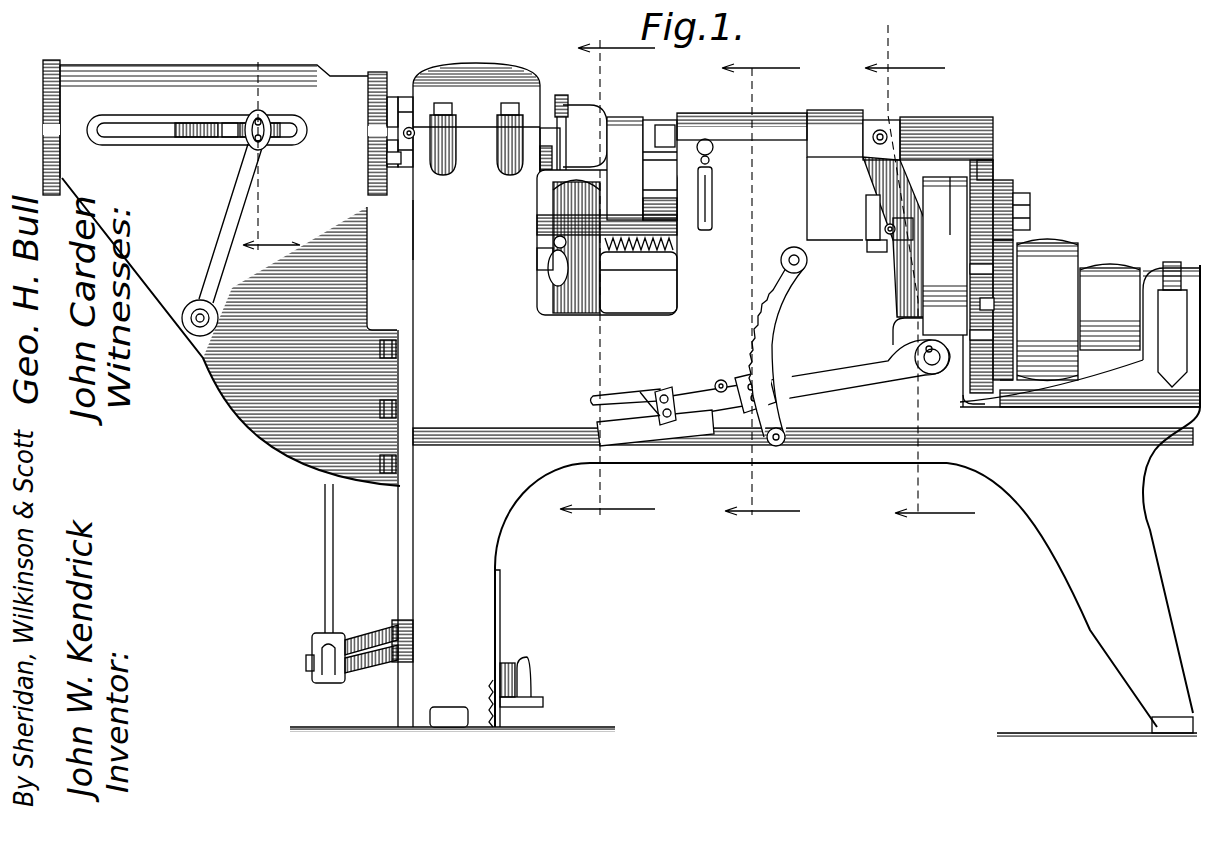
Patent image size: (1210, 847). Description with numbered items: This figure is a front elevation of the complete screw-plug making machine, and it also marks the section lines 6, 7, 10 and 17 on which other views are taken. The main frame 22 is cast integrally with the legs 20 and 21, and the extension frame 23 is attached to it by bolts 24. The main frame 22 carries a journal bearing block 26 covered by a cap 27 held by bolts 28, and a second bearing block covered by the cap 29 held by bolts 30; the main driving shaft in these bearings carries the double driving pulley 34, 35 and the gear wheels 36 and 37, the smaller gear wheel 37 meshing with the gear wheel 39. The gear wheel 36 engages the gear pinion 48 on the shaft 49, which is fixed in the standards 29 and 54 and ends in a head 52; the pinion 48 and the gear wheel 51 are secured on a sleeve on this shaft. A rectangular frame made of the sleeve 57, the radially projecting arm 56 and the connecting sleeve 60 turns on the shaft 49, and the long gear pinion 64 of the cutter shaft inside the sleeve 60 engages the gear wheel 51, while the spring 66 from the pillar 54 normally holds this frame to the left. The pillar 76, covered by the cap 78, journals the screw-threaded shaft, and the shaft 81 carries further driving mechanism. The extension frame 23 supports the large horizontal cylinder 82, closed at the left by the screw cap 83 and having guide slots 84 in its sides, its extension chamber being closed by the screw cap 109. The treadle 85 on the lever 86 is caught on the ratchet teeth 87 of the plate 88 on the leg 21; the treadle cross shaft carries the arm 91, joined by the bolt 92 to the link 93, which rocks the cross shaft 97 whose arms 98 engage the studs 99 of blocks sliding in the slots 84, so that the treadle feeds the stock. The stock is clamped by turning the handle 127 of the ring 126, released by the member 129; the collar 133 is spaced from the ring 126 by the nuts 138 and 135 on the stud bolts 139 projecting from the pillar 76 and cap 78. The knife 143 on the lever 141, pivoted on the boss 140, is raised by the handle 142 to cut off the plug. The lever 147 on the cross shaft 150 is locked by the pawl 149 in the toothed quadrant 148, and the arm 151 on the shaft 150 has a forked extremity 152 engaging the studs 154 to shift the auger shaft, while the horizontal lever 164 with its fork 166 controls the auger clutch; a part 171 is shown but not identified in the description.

The section line 6 6 is at (920, 285).
The section line 7 7 is at (761, 293).
The section line 10 10 is at (607, 279).
The section line 17 17 is at (270, 159).
The leg 20 is at (745, 501).
The leg 21 is at (680, 406).
The main frame 22 is at (830, 448).
The extension frame 23 is at (231, 332).
The bolts 24 is at (380, 405).
The journal bearing block 26 is at (1080, 383).
The cap 27 is at (1152, 268).
The bolts 28 is at (1175, 264).
The cap 29 is at (1013, 236).
The bolts 30 is at (945, 256).
The driving pulley 34 is at (1047, 310).
The driving pulley 35 is at (1105, 270).
The gear wheel 36 is at (1006, 386).
The gear wheel 37 is at (995, 302).
The gear wheel 39 is at (988, 405).
The gear pinion 48 is at (1010, 186).
The shaft 49 is at (870, 190).
The gear wheel 51 is at (995, 170).
The head 52 is at (1030, 211).
The standard 54 is at (579, 312).
The radially projecting arm 56 is at (624, 118).
The sleeve 57 is at (676, 212).
The sleeve 60 is at (653, 122).
The long gear pinion 64 is at (940, 120).
The spring 66 is at (640, 256).
The pillar 76 is at (476, 141).
The cap 78 is at (482, 66).
The shaft 81 is at (553, 244).
The horizontal cylinder 82 is at (172, 68).
The screw cap 83 is at (43, 188).
The horizontal guide slots 84 is at (115, 120).
The treadle 85 is at (536, 700).
The lever 86 is at (513, 666).
The ratchet teeth 87 is at (500, 722).
The plate 88 is at (501, 622).
The arm 91 is at (372, 634).
The bolt 92 is at (308, 666).
The link 93 is at (323, 543).
The cross shaft 97 is at (192, 338).
The arms 98 is at (252, 112).
The stud 99 is at (245, 140).
The screw cap 109 is at (375, 72).
The ring 126 is at (408, 97).
The handle 127 is at (452, 140).
The member 129 is at (403, 131).
The collar 133 is at (392, 97).
The nut 135 is at (387, 152).
The nut 138 is at (395, 165).
The stud bolts 139 is at (412, 232).
The boss 140 is at (545, 170).
The lever 141 is at (546, 226).
The handle 142 is at (550, 270).
The knife 143 is at (562, 102).
The lever 147 is at (805, 384).
The toothed quadrant 148 is at (760, 327).
The pawl 149 is at (718, 386).
The cross shaft 150 is at (933, 376).
The arm 151 is at (898, 322).
The forked extremity 152 is at (800, 156).
The studs 154 is at (878, 128).
The horizontal lever 164 is at (883, 255).
The fork 166 is at (866, 226).
The pin 171 is at (708, 140).